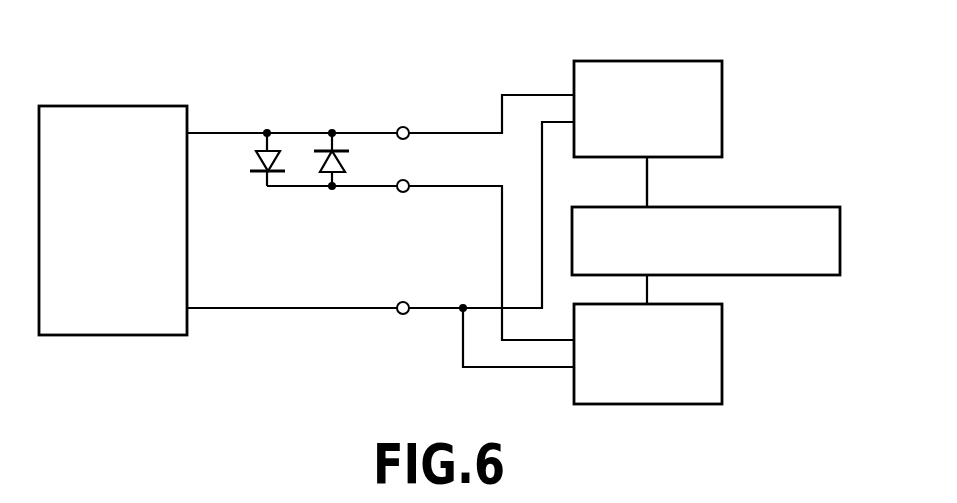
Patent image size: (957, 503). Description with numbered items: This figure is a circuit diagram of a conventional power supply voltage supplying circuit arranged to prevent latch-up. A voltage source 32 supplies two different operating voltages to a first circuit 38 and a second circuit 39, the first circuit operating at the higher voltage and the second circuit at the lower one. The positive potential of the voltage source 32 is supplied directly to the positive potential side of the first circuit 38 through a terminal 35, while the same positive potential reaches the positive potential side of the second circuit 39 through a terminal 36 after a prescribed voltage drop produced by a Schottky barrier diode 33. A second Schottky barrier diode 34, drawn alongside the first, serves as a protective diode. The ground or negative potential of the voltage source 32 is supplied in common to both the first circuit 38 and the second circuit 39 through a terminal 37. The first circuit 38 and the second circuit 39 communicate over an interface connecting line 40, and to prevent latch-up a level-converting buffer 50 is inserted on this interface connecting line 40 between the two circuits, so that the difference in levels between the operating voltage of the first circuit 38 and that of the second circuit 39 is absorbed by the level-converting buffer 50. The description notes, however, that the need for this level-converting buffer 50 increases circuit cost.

The voltage source 32 is at (57, 107).
The Schottky barrier diode 33 is at (256, 157).
The Schottky barrier diode 34 is at (342, 160).
The terminal 35 is at (403, 127).
The terminal 36 is at (403, 192).
The terminal 37 is at (403, 314).
The first circuit 38 is at (716, 62).
The second circuit 39 is at (722, 372).
The interface connecting line 40 is at (647, 193).
The level-converting buffer 50 is at (783, 206).